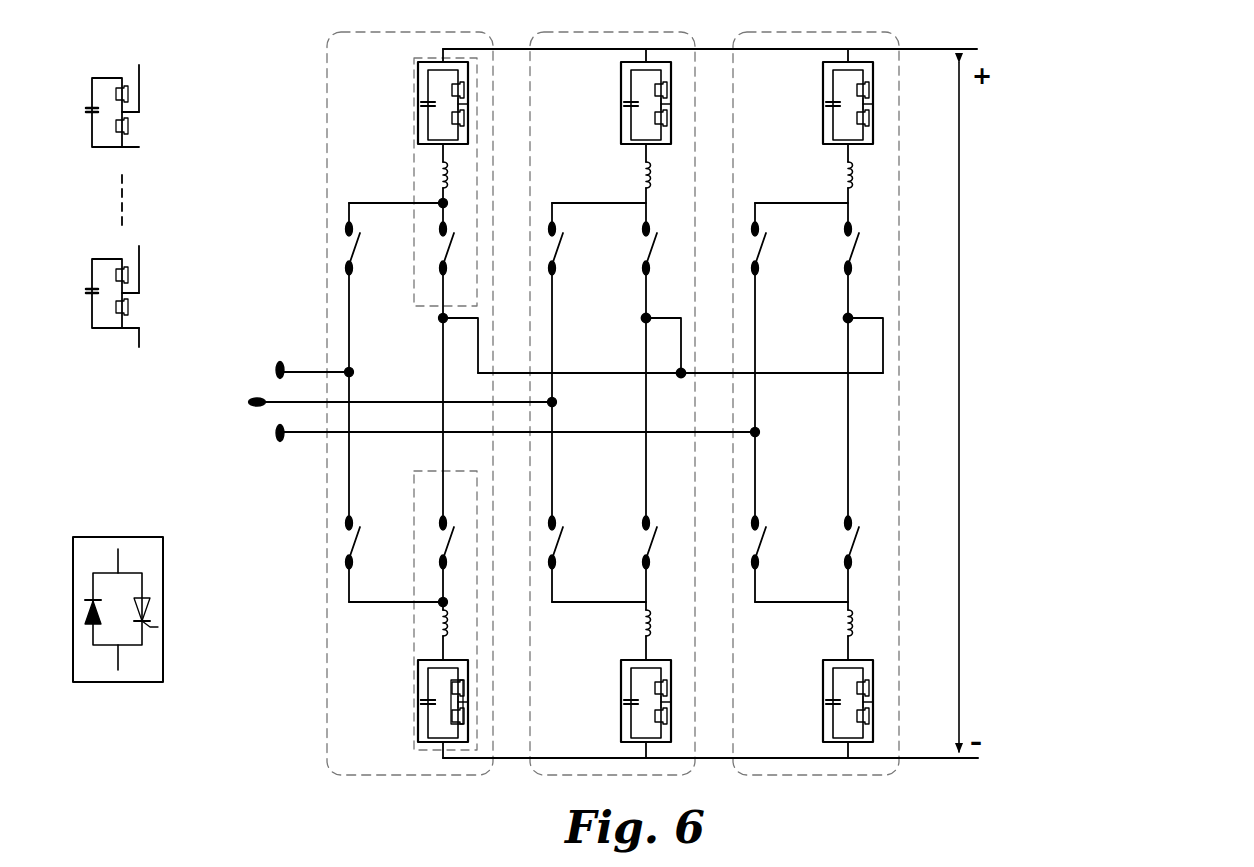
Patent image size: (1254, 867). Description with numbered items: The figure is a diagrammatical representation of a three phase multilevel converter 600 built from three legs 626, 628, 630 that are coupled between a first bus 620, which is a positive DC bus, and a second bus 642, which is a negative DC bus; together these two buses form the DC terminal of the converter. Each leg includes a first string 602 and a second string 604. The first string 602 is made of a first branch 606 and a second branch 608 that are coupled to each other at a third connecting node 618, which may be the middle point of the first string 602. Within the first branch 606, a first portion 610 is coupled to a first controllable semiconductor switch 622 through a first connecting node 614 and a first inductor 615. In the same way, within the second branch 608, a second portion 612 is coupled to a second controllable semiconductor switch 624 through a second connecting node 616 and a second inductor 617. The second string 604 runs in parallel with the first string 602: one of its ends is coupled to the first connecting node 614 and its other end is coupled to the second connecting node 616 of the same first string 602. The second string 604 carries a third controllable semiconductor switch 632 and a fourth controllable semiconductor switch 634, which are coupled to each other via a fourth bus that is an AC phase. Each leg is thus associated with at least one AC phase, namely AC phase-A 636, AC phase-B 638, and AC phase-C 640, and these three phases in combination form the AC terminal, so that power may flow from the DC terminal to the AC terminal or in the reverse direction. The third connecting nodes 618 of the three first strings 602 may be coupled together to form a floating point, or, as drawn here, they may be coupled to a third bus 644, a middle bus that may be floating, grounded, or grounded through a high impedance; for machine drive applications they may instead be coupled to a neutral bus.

The three phase multilevel converter 600 is at (1250, 49).
The first string 602 is at (440, 652).
The second string 604 is at (415, 604).
The first branch 606 is at (414, 147).
The second branch 608 is at (418, 700).
The first portion 610 is at (163, 190).
The second portion 612 is at (419, 713).
The first connecting node 614 is at (446, 203).
The first inductor 615 is at (468, 175).
The second connecting node 616 is at (447, 605).
The second inductor 617 is at (424, 626).
The third connecting node 618 is at (440, 318).
The first bus 620 is at (740, 46).
The first controllable semiconductor switch 622 is at (415, 218).
The second controllable semiconductor switch 624 is at (440, 610).
The leg 626 is at (872, 776).
The leg 628 is at (550, 776).
The leg 630 is at (352, 776).
The third controllable semiconductor switch 632 is at (323, 257).
The fourth controllable semiconductor switch 634 is at (168, 592).
The AC phase-A 636 is at (277, 441).
The AC phase-B 638 is at (252, 405).
The AC phase-C 640 is at (279, 366).
The second bus 642 is at (735, 761).
The third bus 644 is at (800, 376).